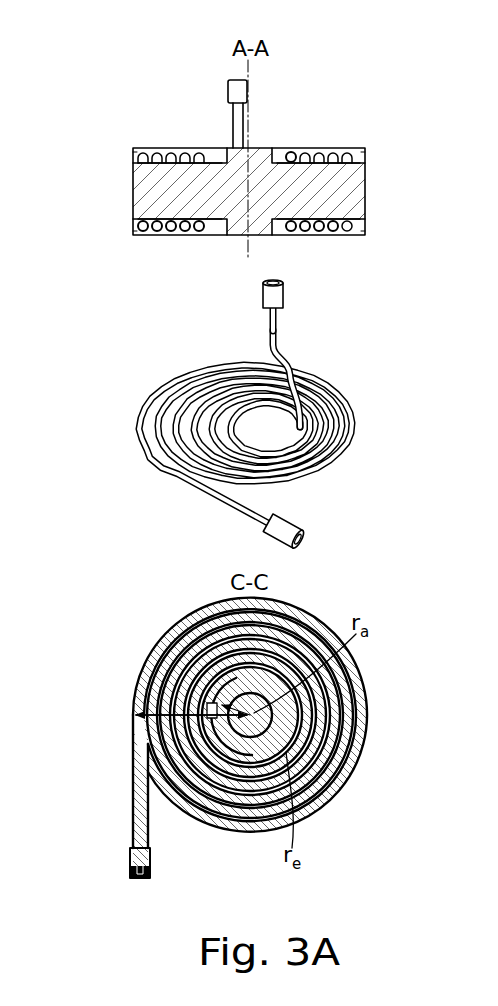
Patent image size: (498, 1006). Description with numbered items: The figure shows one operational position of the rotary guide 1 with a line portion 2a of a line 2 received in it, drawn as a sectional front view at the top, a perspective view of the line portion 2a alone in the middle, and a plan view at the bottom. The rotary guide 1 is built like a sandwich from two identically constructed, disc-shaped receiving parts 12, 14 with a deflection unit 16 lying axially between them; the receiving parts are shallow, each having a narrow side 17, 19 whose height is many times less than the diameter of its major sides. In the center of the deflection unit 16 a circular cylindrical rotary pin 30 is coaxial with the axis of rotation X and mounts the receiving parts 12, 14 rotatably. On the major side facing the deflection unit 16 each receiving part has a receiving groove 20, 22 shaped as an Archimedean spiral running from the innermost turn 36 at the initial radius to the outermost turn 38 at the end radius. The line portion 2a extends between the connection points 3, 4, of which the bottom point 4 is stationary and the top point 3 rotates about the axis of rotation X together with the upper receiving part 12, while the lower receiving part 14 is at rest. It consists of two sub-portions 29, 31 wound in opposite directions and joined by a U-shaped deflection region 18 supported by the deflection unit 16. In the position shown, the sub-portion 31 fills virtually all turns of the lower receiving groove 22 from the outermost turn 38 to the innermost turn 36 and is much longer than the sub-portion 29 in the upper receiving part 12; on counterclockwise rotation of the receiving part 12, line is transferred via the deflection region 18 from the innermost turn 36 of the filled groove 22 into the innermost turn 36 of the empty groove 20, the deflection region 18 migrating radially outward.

The rotary guide 1 is at (164, 76).
The line 2 is at (229, 113).
The line portion 2a is at (130, 410).
The connection point 3 is at (292, 292).
The connection point 4 is at (309, 530).
The receiving part 12 is at (358, 150).
The receiving part 14 is at (360, 233).
The deflection unit 16 is at (350, 196).
The narrow side 17 is at (367, 157).
The deflection region 18 is at (293, 362).
The narrow side 19 is at (368, 224).
The receiving groove 20 is at (152, 155).
The receiving groove 22 is at (152, 232).
The sub-portion 29 is at (279, 322).
The rotary pin 30 is at (258, 162).
The sub-portion 31 is at (358, 432).
The innermost turn 36 is at (197, 232).
The outermost turn 38 is at (130, 230).